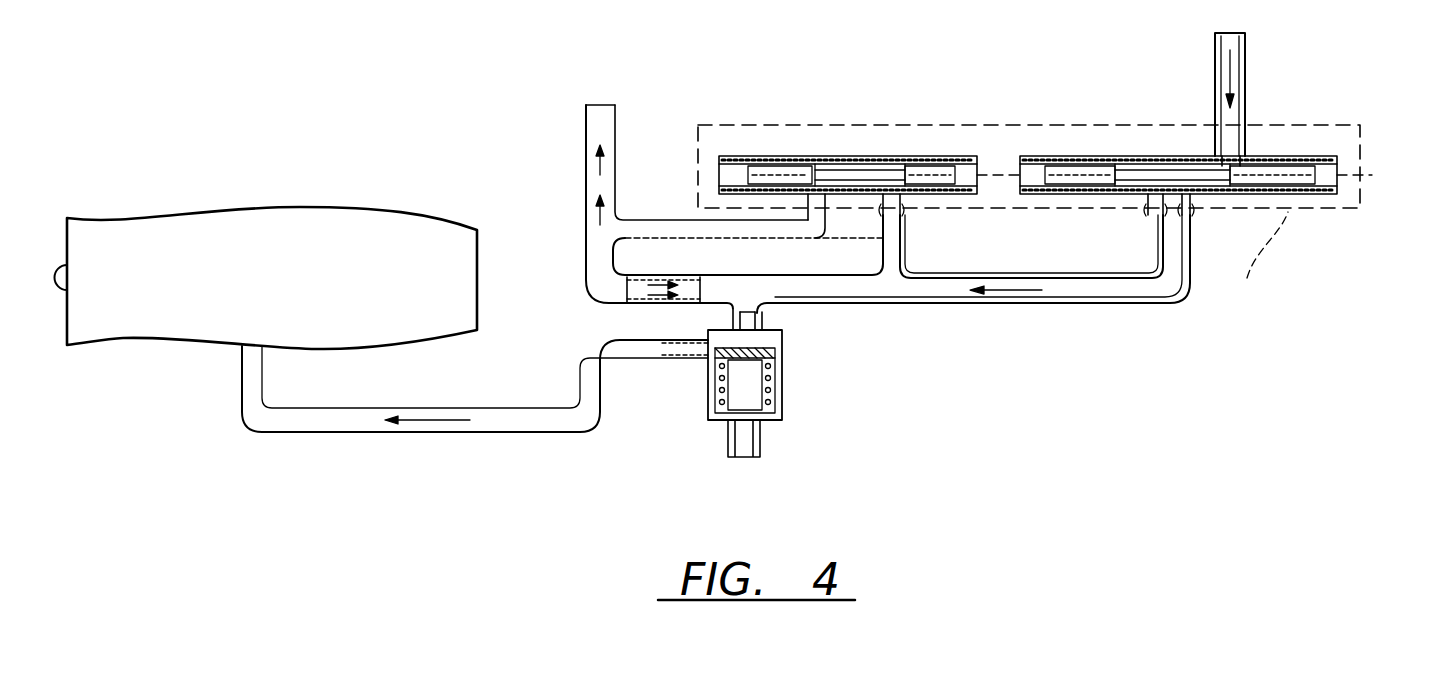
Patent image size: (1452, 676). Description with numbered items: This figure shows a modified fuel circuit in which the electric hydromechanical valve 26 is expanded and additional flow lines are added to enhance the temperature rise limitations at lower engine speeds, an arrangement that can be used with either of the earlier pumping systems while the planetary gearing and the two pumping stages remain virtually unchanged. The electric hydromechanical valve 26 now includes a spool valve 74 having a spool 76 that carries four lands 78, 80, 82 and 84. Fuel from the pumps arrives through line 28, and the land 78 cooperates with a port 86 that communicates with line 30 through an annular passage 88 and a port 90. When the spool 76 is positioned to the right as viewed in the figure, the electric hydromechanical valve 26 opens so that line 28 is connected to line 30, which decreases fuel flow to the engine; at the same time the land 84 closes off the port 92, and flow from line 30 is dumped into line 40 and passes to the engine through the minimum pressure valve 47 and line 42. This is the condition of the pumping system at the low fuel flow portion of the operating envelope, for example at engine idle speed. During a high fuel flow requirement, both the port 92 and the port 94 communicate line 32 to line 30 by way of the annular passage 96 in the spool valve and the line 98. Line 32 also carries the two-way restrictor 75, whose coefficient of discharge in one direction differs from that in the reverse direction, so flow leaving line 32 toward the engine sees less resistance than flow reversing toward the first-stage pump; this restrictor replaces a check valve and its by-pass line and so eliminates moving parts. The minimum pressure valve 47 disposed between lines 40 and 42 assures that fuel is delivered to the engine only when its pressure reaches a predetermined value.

The electric hydromechanical valve 26 is at (1325, 210).
The line 28 is at (1247, 107).
The line 30 is at (1062, 304).
The line 32 is at (587, 147).
The line 40 is at (763, 321).
The line 42 is at (460, 432).
The minimum pressure valve 47 is at (780, 388).
The spool valve 74 is at (1293, 157).
The two-way restrictor 75 is at (630, 316).
The spool 76 is at (968, 156).
The land 78 is at (1315, 162).
The land 80 is at (1080, 164).
The land 82 is at (923, 156).
The land 84 is at (797, 156).
The port 86 is at (1222, 135).
The annular passage 88 is at (1208, 200).
The port 90 is at (1157, 214).
The port 92 is at (828, 215).
The port 94 is at (902, 214).
The annular passage 96 is at (845, 156).
The line 98 is at (905, 255).